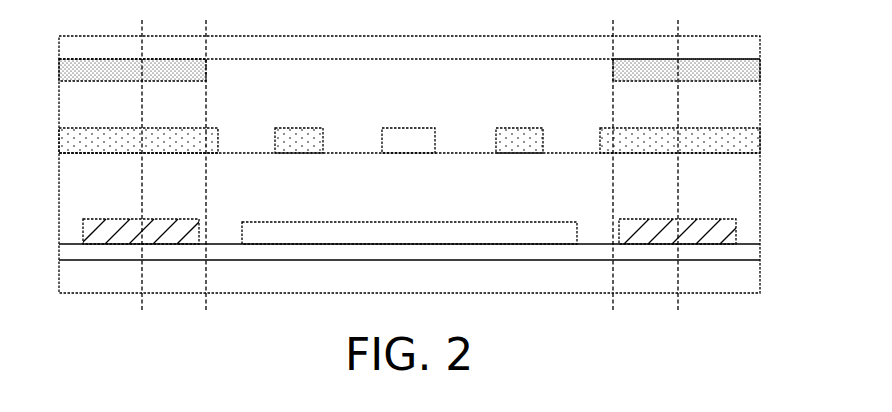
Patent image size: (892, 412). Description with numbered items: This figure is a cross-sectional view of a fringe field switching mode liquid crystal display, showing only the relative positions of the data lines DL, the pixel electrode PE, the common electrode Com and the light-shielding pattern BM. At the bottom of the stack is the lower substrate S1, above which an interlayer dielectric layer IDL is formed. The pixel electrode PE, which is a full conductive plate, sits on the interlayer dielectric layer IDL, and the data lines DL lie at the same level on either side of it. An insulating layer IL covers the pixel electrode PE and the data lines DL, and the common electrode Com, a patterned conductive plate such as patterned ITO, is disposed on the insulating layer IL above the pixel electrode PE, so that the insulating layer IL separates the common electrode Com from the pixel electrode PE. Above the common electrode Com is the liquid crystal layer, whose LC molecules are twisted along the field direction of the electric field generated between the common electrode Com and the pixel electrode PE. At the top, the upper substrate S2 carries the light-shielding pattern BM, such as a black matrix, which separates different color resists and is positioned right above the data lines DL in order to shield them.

The upper substrate S2 is at (409, 48).
The light-shielding pattern BM is at (409, 70).
The LC molecules LC is at (409, 117).
The common electrode Com is at (409, 141).
The insulating layer IL is at (409, 198).
The data line DL is at (413, 232).
The pixel electrode PE is at (409, 234).
The interlayer dielectric layer IDL is at (755, 252).
The lower substrate S1 is at (409, 276).